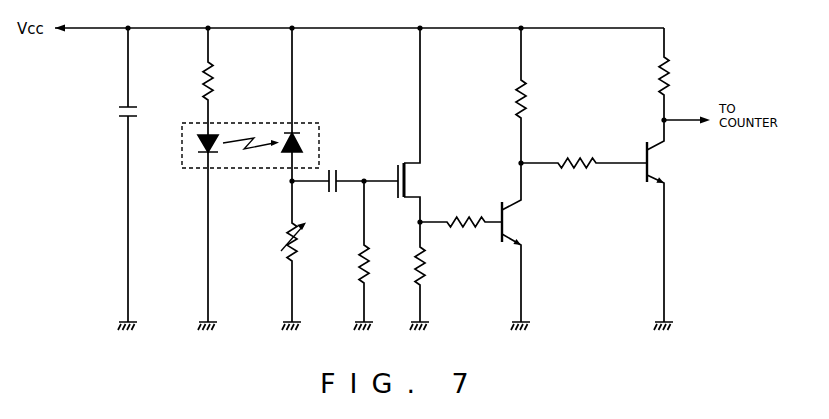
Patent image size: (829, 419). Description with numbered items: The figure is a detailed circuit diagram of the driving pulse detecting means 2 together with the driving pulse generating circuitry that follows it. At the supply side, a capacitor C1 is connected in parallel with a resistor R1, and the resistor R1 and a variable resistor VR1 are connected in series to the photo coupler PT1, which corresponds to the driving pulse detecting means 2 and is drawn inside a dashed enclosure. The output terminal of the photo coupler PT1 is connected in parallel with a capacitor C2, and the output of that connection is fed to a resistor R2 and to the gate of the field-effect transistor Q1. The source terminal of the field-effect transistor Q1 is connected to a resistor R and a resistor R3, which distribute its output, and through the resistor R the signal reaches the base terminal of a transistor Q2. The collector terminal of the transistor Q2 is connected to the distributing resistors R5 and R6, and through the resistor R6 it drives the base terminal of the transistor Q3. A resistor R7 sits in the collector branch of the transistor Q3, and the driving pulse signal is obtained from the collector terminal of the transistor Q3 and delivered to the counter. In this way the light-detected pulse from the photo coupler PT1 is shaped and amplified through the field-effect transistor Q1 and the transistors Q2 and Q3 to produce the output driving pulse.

The capacitor C1 is at (134, 179).
The resistor R1 is at (218, 81).
The photo coupler PT1 is at (250, 179).
The driving pulse detecting means 2 is at (246, 169).
The variable resistor VR1 is at (305, 255).
The capacitor C2 is at (328, 174).
The resistor R2 is at (372, 255).
The field-effect transistor Q1 is at (403, 125).
The resistor R is at (461, 213).
The resistor R3 is at (429, 276).
The transistor Q2 is at (522, 246).
The distributing resistor R5 is at (532, 95).
The distributing resistor R6 is at (584, 153).
The transistor Q3 is at (668, 225).
The resistor R7 is at (675, 74).